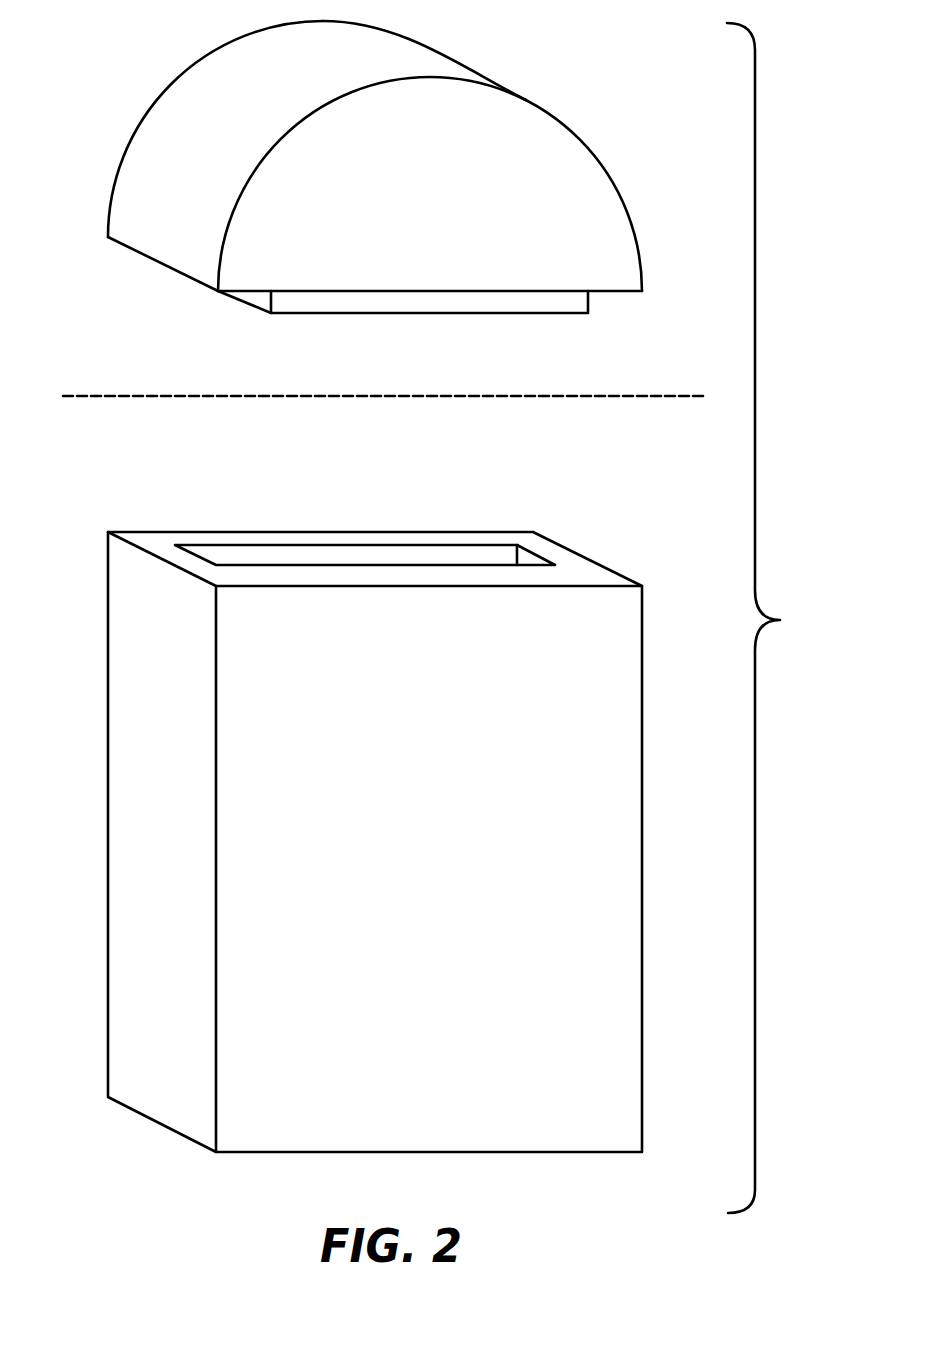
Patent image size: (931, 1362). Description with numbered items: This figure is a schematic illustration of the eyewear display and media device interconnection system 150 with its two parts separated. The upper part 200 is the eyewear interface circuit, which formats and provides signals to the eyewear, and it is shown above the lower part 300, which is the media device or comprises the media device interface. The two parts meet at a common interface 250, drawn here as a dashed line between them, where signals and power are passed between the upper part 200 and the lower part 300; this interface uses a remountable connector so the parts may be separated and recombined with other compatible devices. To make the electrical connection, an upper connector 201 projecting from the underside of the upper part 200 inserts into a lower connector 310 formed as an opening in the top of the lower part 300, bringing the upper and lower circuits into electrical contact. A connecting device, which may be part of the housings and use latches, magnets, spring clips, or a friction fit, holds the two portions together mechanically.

The eyewear display and media device interconnection system 150 is at (781, 618).
The upper part 200 is at (592, 172).
The upper connector 201 is at (302, 308).
The interface 250 is at (152, 397).
The lower part 300 is at (588, 710).
The lower connector 310 is at (292, 558).